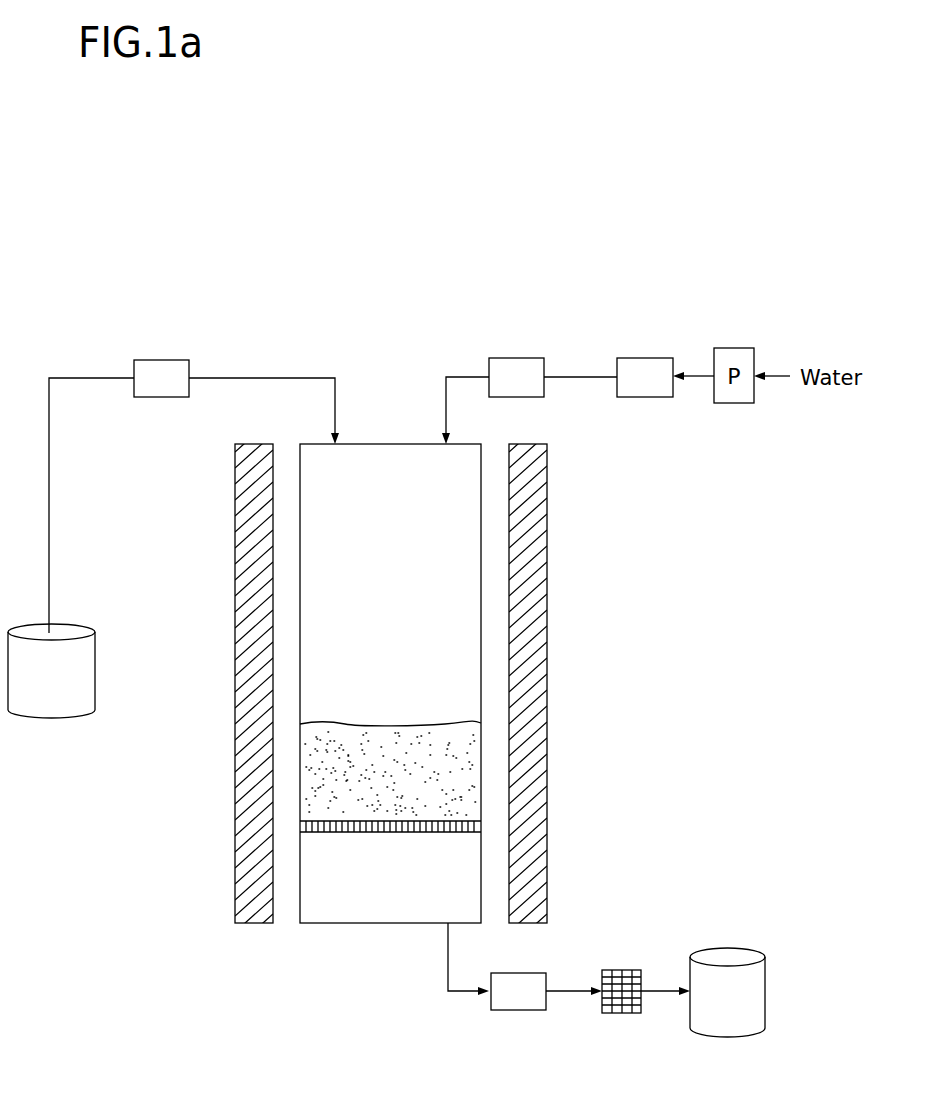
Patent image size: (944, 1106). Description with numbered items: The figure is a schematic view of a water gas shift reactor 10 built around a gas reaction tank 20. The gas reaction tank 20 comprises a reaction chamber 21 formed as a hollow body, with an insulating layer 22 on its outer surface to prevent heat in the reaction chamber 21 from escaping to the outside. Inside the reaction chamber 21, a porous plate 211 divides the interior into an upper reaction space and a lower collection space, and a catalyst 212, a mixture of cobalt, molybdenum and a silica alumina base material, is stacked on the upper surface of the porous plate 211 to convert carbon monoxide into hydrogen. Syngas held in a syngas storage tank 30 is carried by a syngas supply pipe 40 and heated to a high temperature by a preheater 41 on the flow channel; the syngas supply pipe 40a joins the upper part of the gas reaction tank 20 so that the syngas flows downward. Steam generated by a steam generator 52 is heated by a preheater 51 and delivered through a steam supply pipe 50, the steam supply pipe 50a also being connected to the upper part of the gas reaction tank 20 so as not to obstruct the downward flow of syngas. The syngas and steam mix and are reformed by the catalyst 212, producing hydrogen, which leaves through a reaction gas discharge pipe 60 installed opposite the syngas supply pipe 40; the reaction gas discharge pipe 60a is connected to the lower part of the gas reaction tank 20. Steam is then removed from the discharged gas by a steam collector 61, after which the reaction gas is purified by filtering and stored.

The water gas shift reactor 10 is at (614, 208).
The gas reaction tank 20 is at (447, 683).
The reaction chamber 21 is at (492, 590).
The insulating layer 22 is at (618, 578).
The porous plate 211 is at (453, 832).
The catalyst 212 is at (470, 773).
The syngas storage tank 30 is at (47, 719).
The syngas supply pipe 40 is at (194, 476).
The syngas supply pipe 40a is at (263, 378).
The preheater 41 is at (157, 360).
The steam supply pipe 50 is at (449, 378).
The steam supply pipe 50a is at (458, 377).
The preheater 51 is at (537, 358).
The steam generator 52 is at (640, 358).
The reaction gas discharge pipe 60 is at (409, 959).
The reaction gas discharge pipe 60a is at (448, 953).
The steam collector 61 is at (518, 1010).